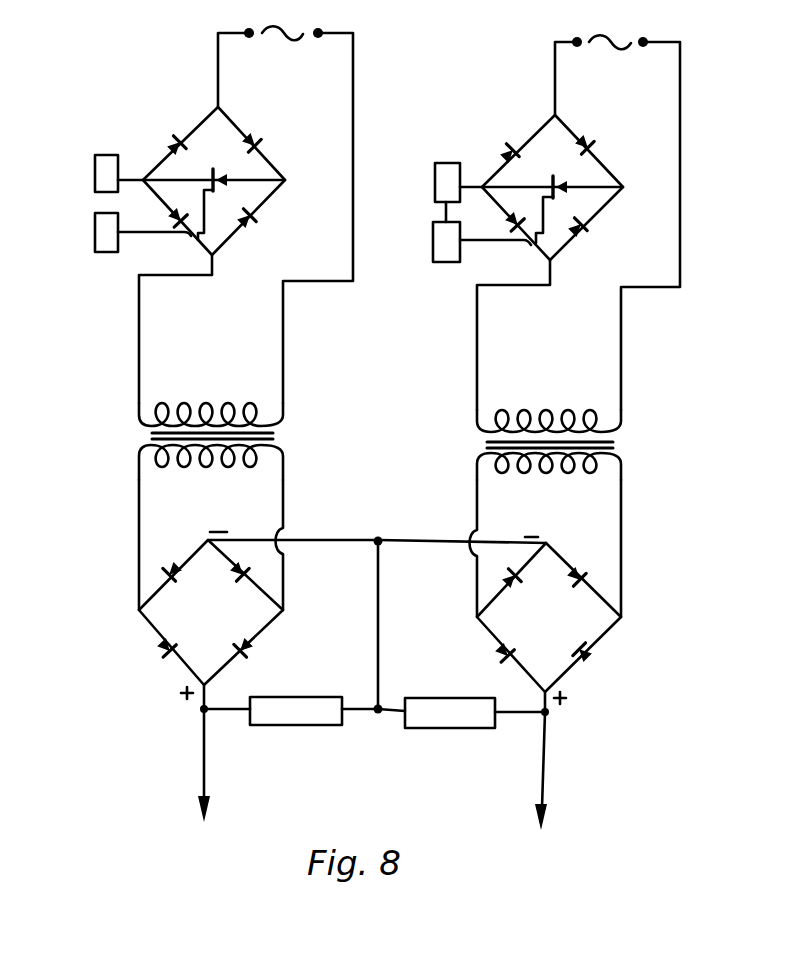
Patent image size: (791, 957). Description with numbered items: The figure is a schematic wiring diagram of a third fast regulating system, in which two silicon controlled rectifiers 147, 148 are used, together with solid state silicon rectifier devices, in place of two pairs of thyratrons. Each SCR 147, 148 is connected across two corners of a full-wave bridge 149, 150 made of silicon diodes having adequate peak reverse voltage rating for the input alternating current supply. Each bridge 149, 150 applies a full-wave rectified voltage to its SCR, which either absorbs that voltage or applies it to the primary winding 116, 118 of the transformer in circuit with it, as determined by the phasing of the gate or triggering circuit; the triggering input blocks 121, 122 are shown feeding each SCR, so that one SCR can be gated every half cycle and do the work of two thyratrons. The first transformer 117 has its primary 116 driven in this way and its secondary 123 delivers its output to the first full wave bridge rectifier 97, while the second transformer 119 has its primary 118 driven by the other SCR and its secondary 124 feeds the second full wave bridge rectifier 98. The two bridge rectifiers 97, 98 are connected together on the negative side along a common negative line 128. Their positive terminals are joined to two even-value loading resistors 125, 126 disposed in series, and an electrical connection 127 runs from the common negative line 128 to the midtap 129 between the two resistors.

The first full wave bridge rectifier 97 is at (258, 634).
The second full wave bridge rectifier 98 is at (490, 642).
The primary winding 116 is at (243, 393).
The first transformer 117 is at (142, 433).
The primary winding 118 is at (550, 417).
The second transformer 119 is at (626, 444).
The control signal input block 121 is at (95, 244).
The control signal input block 122 is at (101, 155).
The secondary 123 is at (232, 462).
The secondary 124 is at (570, 468).
The loading resistor 125 is at (290, 697).
The loading resistor 126 is at (460, 698).
The electrical connection 127 is at (379, 633).
The common negative line 128 is at (440, 542).
The midtap 129 is at (378, 713).
The silicon controlled rectifier 147 is at (216, 175).
The silicon controlled rectifier 148 is at (556, 182).
The full-wave bridge 149 is at (268, 200).
The full-wave bridge 150 is at (604, 210).